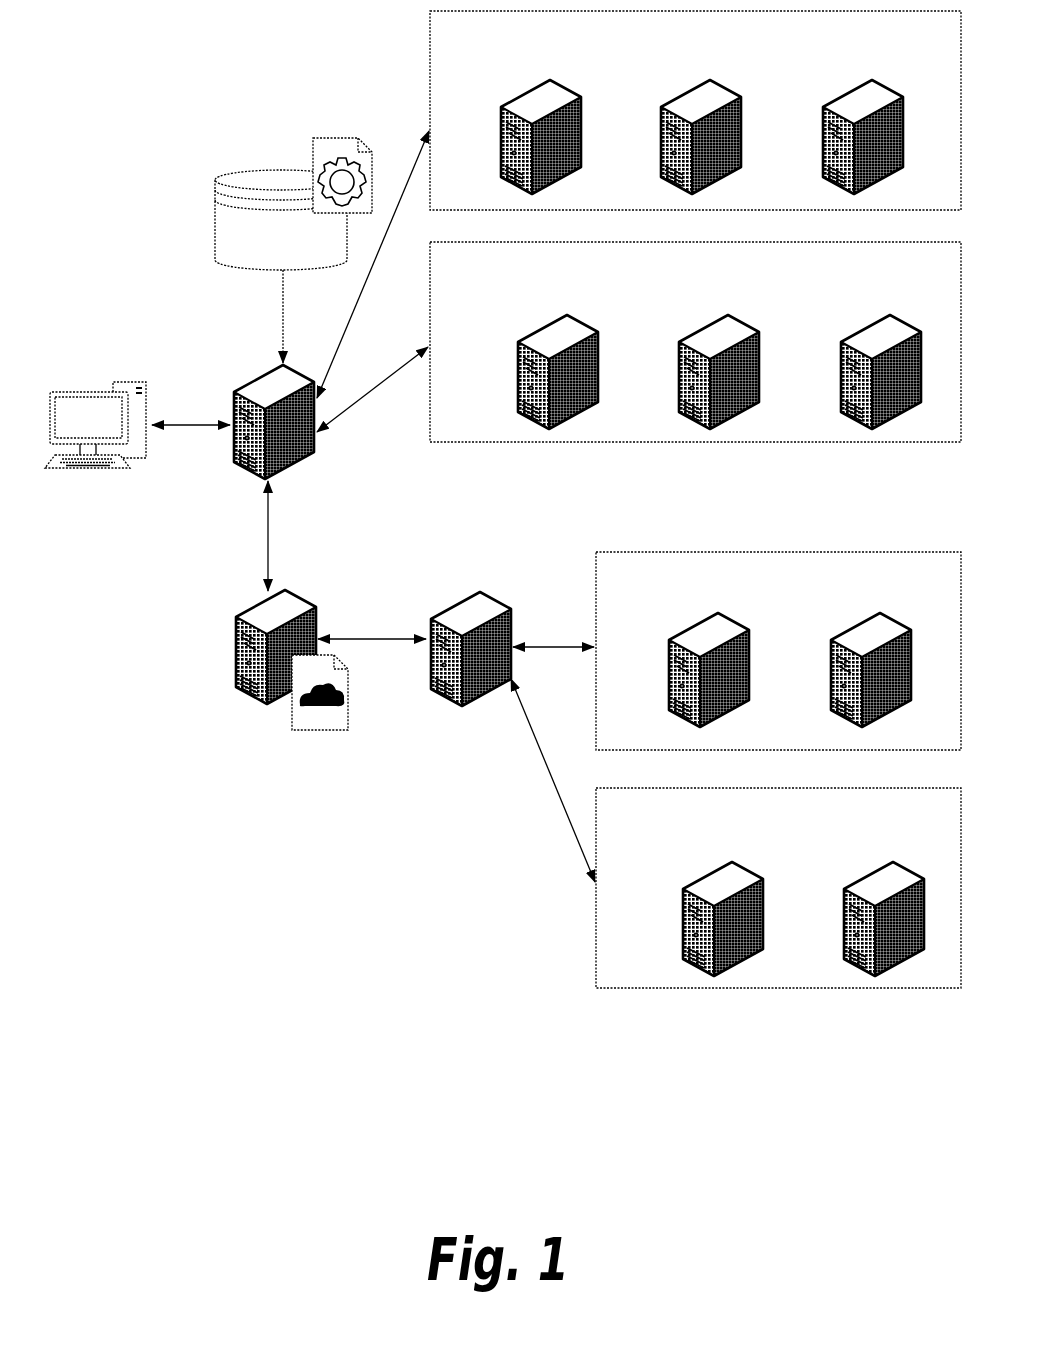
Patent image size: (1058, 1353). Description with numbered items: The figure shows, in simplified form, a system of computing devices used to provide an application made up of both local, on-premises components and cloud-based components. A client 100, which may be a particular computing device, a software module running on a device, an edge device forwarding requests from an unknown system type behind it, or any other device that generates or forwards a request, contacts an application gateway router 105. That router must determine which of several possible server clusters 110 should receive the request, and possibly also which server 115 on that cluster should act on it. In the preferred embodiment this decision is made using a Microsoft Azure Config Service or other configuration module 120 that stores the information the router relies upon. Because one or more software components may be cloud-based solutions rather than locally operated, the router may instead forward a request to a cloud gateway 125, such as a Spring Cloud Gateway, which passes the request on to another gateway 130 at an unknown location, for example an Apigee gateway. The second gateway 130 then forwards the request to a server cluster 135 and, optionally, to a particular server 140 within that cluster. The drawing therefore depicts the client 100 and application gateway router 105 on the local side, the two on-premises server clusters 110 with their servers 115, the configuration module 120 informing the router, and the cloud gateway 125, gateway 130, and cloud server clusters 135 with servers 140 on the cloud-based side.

The client 100 is at (117, 383).
The application gateway router 105 is at (260, 380).
The server cluster 110 is at (442, 201).
The server 115 is at (530, 89).
The configuration module 120 is at (267, 251).
The cloud gateway 125 is at (233, 619).
The gateway 130 is at (451, 611).
The server cluster 135 is at (605, 743).
The server 140 is at (700, 619).